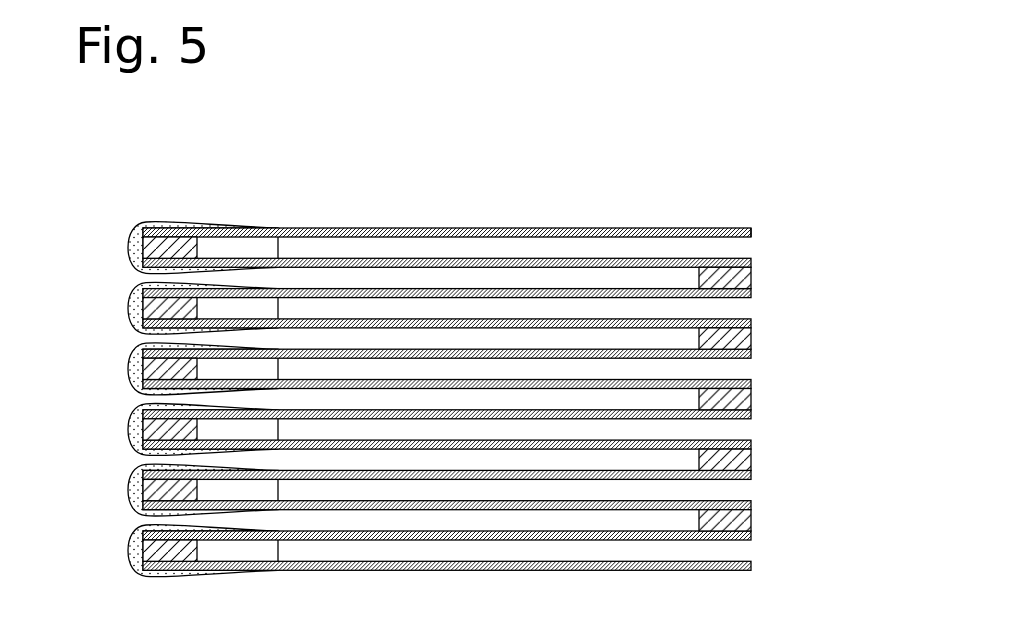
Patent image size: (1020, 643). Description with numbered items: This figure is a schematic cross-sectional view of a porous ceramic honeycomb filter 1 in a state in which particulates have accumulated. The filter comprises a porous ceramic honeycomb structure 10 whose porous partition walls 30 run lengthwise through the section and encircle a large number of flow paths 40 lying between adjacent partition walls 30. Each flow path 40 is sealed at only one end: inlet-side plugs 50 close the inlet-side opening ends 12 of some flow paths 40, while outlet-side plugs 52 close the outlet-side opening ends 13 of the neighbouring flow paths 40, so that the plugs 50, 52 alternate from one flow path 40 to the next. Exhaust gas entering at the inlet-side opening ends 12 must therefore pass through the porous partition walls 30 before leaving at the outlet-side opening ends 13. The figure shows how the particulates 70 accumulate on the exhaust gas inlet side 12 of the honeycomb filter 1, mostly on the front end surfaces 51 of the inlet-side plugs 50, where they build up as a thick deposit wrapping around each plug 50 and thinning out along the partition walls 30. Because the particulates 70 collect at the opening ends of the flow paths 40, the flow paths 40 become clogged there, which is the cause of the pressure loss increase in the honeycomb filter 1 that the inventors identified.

The porous ceramic honeycomb filter 1 is at (133, 148).
The porous ceramic honeycomb structure 10 is at (447, 210).
The inlet-side opening end 12 is at (138, 276).
The outlet-side opening end 13 is at (753, 231).
The porous partition wall 30 is at (373, 258).
The flow path 40 is at (495, 247).
The inlet-side plug 50 is at (172, 553).
The front end surface 51 is at (130, 548).
The outlet-side plug 52 is at (722, 520).
The particulates 70 is at (150, 222).